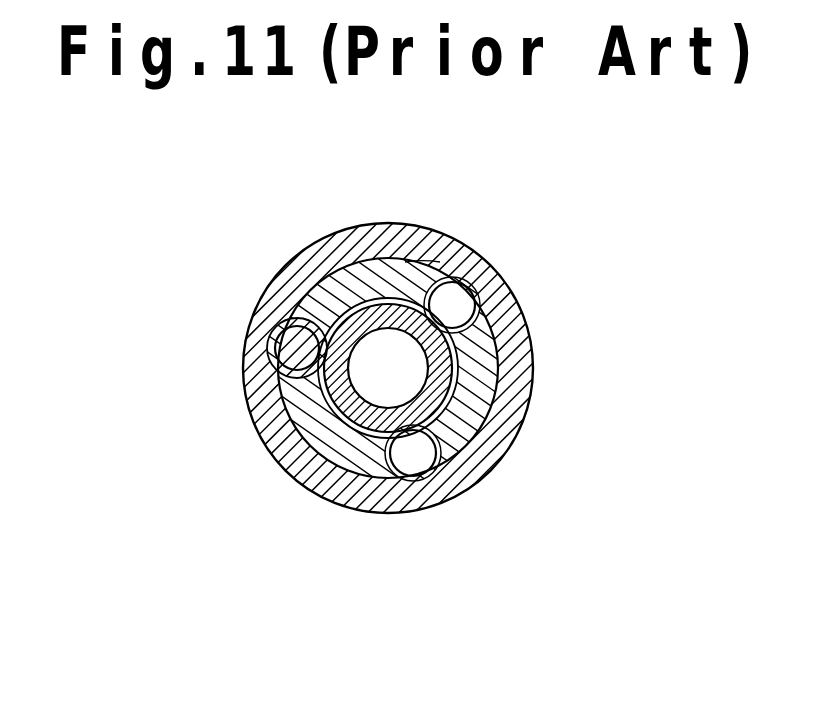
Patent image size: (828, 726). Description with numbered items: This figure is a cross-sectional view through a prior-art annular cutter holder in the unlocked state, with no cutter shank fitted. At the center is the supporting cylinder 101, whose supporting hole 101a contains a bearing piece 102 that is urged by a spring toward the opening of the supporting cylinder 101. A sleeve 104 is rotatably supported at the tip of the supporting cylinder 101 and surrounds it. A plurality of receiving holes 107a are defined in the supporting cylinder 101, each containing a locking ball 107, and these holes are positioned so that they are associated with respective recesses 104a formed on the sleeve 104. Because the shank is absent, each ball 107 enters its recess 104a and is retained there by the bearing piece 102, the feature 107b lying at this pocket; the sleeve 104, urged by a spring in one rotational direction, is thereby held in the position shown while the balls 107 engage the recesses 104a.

The supporting cylinder 101 is at (492, 440).
The supporting hole 101a is at (458, 430).
The bearing piece 102 is at (278, 456).
The sleeve 104 is at (538, 322).
The recess 104a is at (445, 245).
The locking ball 107 is at (468, 300).
The receiving hole 107a is at (425, 270).
The ball pocket 107b is at (252, 323).